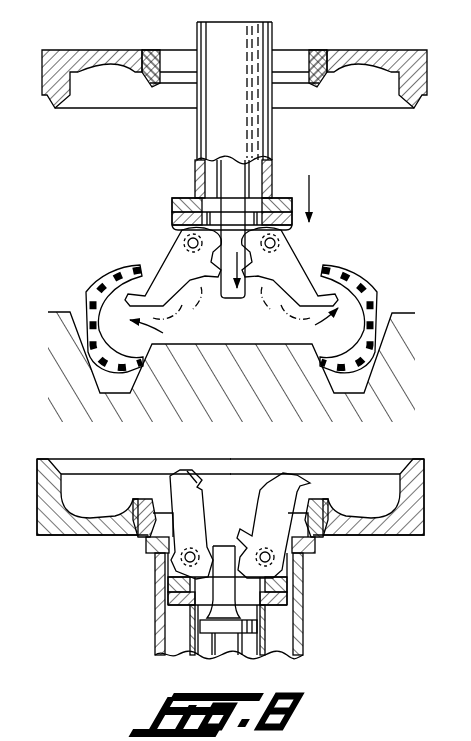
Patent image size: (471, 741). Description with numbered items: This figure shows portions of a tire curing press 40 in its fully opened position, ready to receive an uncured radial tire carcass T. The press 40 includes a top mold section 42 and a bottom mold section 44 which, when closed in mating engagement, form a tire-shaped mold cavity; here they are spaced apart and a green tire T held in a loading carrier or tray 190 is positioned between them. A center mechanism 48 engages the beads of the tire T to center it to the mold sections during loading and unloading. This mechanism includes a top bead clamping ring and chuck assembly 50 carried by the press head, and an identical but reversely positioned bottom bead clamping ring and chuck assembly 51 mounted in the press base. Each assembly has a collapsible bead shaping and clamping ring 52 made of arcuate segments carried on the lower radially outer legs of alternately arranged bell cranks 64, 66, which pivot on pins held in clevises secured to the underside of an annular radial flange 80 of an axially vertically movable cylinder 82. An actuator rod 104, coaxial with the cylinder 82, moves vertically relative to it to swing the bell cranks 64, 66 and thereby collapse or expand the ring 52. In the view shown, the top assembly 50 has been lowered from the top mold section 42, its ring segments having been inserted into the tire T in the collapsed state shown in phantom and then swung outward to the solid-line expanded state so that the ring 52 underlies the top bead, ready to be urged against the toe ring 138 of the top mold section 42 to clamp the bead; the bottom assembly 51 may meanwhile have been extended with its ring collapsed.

The tire curing press 40 is at (335, 42).
The top mold section 42 is at (112, 50).
The bottom mold section 44 is at (373, 537).
The center mechanism 48 is at (113, 255).
The top bead clamping ring and chuck assembly 50 is at (308, 245).
The bottom bead clamping ring and chuck assembly 51 is at (223, 533).
The collapsible bead shaping and clamping ring 52 is at (131, 297).
The bell crank 64 is at (290, 275).
The bell crank 66 is at (178, 262).
The annular radial flange 80 is at (183, 198).
The cylinder 82 is at (197, 37).
The actuator rod 104 is at (253, 170).
The toe ring 138 is at (137, 535).
The loading carrier or tray 190 is at (372, 370).
The radial tire carcass T is at (381, 282).